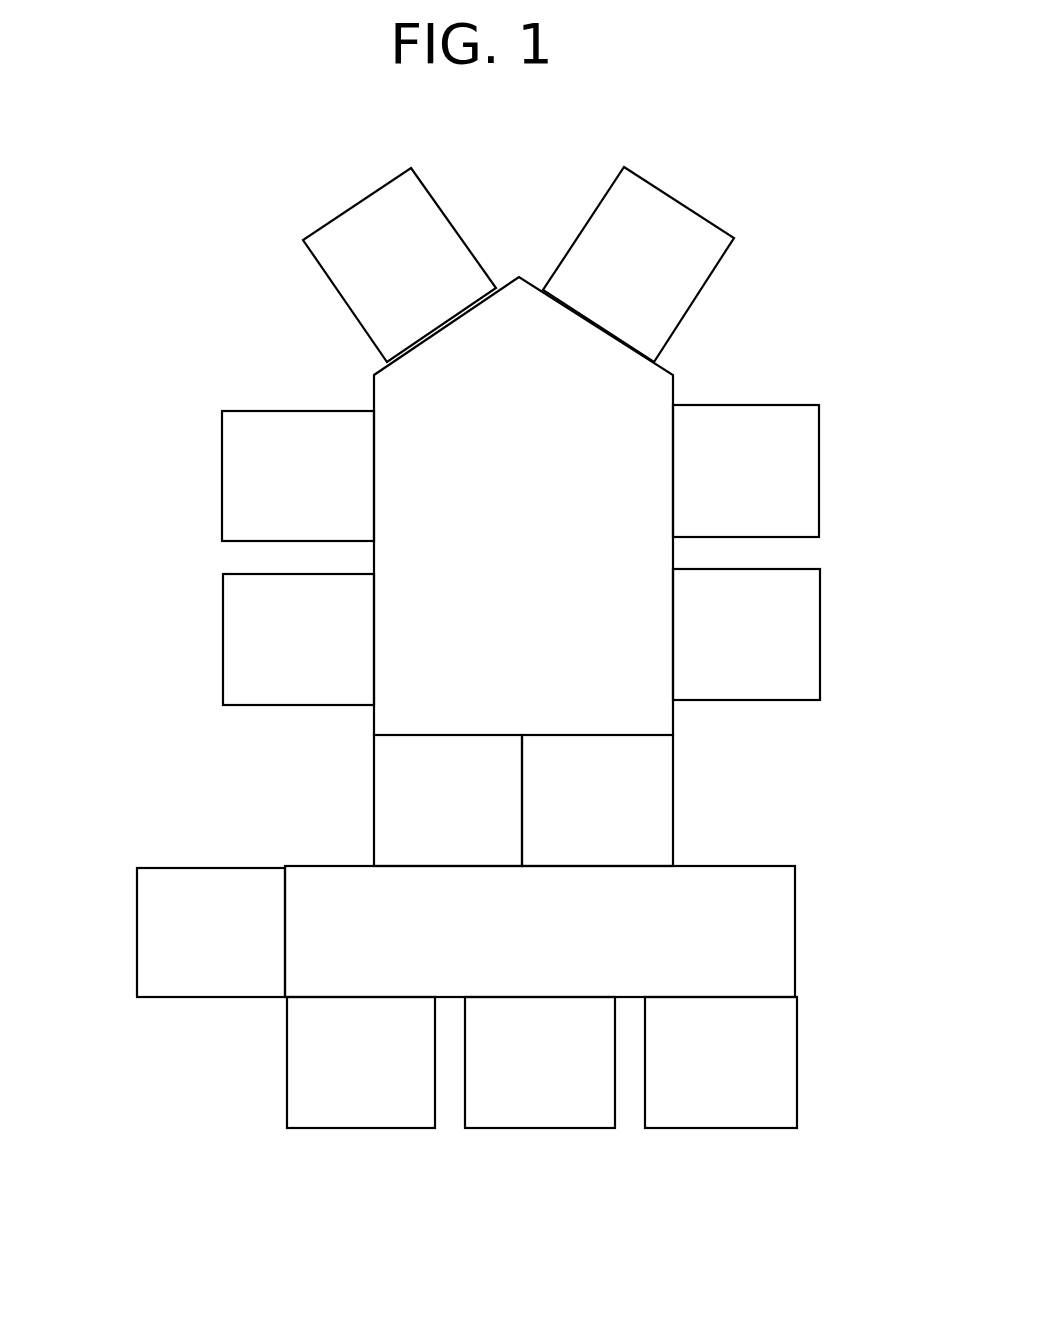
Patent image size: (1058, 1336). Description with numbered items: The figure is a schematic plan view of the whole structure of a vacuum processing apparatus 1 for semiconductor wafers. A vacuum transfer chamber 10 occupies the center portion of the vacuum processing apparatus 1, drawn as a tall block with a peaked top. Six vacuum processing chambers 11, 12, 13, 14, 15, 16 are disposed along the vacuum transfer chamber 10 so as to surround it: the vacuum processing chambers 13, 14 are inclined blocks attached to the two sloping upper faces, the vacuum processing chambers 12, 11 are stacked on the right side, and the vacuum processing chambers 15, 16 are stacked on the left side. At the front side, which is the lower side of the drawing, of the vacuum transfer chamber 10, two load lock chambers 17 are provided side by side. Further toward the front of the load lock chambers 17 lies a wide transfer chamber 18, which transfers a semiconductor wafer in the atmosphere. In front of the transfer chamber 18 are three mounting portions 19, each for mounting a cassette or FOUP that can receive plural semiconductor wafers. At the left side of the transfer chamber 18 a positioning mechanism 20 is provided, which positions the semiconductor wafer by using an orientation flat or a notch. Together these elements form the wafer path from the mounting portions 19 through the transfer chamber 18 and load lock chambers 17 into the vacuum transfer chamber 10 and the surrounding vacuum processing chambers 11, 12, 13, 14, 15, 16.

The vacuum processing apparatus 1 is at (773, 170).
The vacuum transfer chamber 10 is at (607, 393).
The vacuum processing chamber 11 is at (745, 619).
The vacuum processing chamber 12 is at (743, 456).
The vacuum processing chamber 13 is at (674, 259).
The vacuum processing chamber 14 is at (352, 260).
The vacuum processing chamber 15 is at (275, 460).
The vacuum processing chamber 16 is at (277, 625).
The load lock chamber 17 is at (447, 818).
The transfer chamber 18 is at (713, 914).
The mounting portion 19 is at (349, 1082).
The positioning mechanism 20 is at (213, 951).